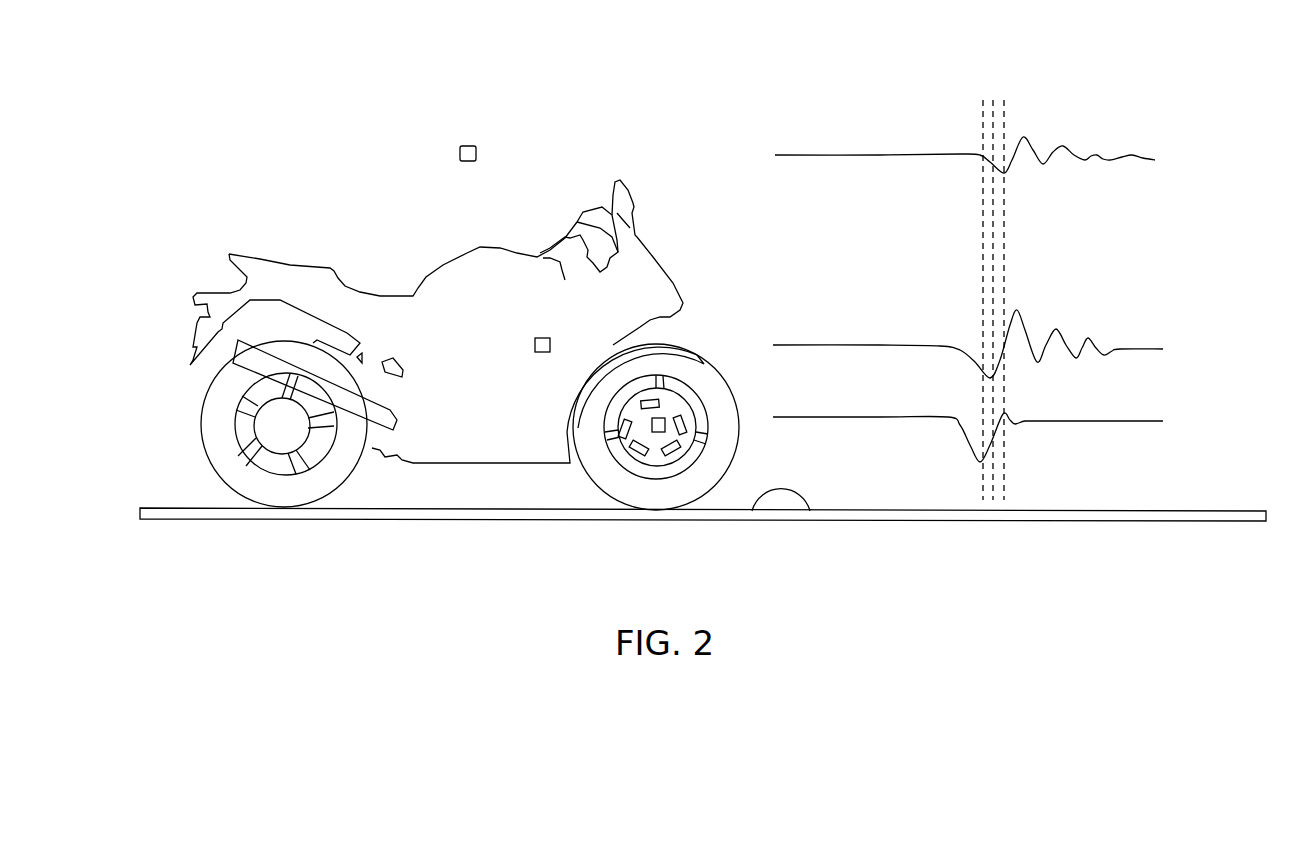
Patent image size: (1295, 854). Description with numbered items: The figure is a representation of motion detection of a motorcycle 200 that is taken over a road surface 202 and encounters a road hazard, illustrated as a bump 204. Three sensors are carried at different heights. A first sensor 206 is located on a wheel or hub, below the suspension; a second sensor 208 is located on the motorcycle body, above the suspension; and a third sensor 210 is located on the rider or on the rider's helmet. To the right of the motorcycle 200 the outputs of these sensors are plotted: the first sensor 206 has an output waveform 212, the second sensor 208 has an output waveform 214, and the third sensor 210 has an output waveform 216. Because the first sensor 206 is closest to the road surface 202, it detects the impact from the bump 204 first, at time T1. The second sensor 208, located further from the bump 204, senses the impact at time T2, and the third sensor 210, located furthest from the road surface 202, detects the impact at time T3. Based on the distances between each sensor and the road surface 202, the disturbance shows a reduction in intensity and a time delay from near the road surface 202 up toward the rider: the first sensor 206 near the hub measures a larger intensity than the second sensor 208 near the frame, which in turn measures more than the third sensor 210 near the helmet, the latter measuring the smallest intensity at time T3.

The motorcycle 200 is at (338, 231).
The road surface 202 is at (1165, 511).
The bump 204 is at (781, 505).
The first sensor 206 is at (666, 420).
The second sensor 208 is at (535, 338).
The third sensor 210 is at (460, 148).
The output waveform 212 is at (905, 417).
The output waveform 214 is at (893, 345).
The output waveform 216 is at (875, 155).
The time T1 is at (983, 100).
The time T2 is at (993, 100).
The time T3 is at (1004, 100).